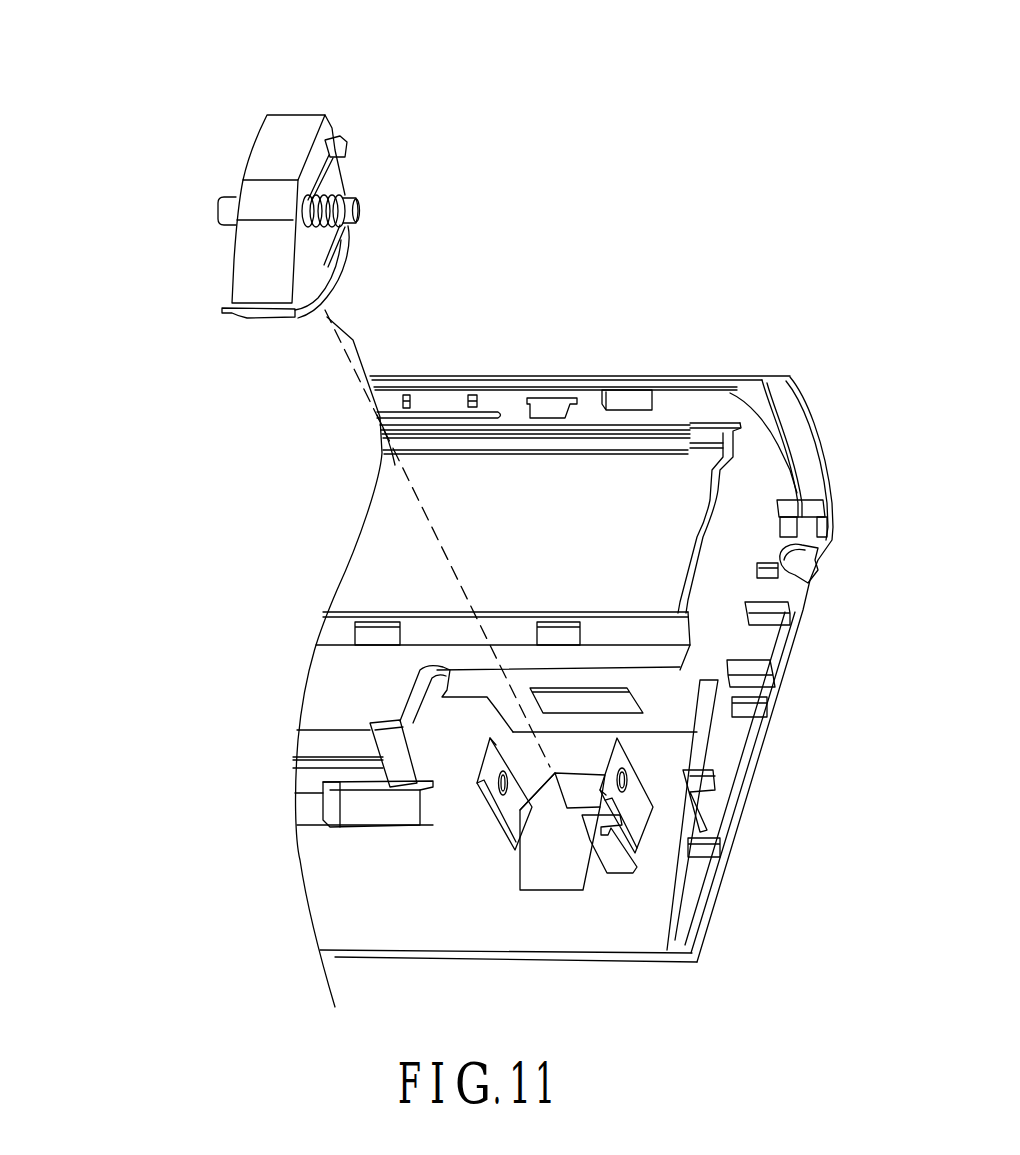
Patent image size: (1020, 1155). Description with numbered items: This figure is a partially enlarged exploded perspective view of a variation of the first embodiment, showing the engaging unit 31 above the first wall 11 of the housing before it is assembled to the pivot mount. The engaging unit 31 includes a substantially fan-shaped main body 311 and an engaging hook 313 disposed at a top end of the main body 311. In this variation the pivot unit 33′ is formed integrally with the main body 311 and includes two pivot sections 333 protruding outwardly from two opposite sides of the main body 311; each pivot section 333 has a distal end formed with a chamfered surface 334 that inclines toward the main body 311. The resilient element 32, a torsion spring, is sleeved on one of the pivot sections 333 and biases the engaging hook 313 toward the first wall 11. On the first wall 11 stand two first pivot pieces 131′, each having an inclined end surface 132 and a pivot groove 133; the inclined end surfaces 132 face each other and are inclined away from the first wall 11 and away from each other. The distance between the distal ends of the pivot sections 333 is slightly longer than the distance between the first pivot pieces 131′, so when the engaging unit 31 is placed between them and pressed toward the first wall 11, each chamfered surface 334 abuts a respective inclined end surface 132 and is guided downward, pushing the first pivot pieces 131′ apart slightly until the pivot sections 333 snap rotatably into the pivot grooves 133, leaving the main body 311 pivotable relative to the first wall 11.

The first wall 11 is at (598, 933).
The first pivot pieces 131′ is at (503, 828).
The inclined end surface 132 is at (490, 763).
The pivot groove 133 is at (502, 793).
The engaging unit 31 is at (315, 191).
The main body 311 is at (268, 250).
The engaging hook 313 is at (278, 135).
The resilient element 32 is at (338, 190).
The pivot unit 33′ is at (340, 161).
The pivot sections 333 is at (228, 210).
The chamfered surface 334 is at (358, 218).